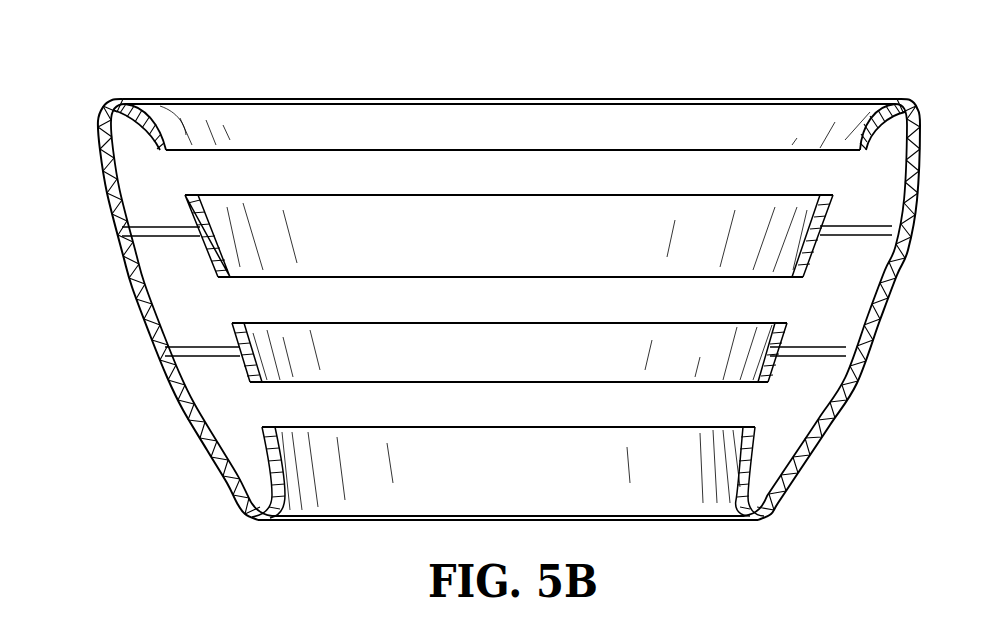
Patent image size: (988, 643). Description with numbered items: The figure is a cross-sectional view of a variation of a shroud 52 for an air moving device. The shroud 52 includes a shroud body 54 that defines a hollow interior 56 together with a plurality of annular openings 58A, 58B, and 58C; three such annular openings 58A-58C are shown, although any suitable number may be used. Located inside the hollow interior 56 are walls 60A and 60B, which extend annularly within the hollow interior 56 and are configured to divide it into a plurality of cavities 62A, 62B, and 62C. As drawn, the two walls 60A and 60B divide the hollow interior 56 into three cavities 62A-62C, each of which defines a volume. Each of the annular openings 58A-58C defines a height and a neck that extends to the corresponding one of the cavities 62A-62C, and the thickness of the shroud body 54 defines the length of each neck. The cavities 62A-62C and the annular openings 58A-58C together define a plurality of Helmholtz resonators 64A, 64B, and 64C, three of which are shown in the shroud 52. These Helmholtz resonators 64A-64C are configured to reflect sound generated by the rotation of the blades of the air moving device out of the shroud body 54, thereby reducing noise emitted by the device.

The shroud 52 is at (107, 193).
The shroud body 54 is at (132, 287).
The hollow interior 56 is at (200, 377).
The annular opening 58A is at (343, 176).
The annular opening 58B is at (477, 305).
The annular opening 58C is at (617, 407).
The wall 60A is at (141, 227).
The wall 60B is at (180, 347).
The cavity 62A is at (165, 185).
The cavity 62B is at (207, 313).
The cavity 62C is at (247, 416).
The Helmholtz resonator 64A is at (893, 185).
The Helmholtz resonator 64B is at (850, 311).
The Helmholtz resonator 64C is at (810, 415).